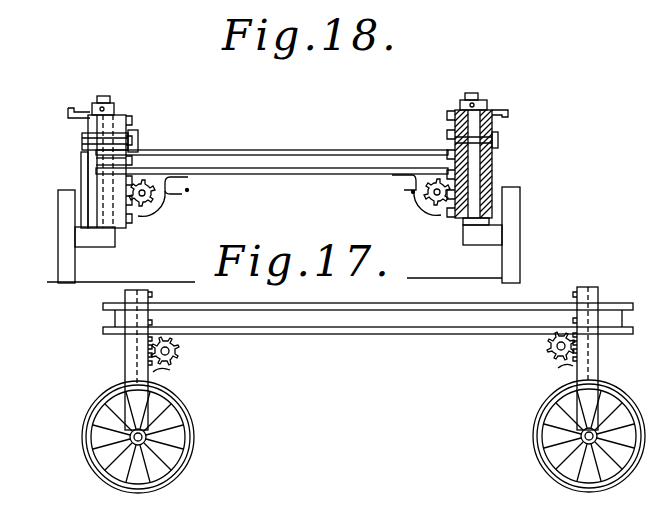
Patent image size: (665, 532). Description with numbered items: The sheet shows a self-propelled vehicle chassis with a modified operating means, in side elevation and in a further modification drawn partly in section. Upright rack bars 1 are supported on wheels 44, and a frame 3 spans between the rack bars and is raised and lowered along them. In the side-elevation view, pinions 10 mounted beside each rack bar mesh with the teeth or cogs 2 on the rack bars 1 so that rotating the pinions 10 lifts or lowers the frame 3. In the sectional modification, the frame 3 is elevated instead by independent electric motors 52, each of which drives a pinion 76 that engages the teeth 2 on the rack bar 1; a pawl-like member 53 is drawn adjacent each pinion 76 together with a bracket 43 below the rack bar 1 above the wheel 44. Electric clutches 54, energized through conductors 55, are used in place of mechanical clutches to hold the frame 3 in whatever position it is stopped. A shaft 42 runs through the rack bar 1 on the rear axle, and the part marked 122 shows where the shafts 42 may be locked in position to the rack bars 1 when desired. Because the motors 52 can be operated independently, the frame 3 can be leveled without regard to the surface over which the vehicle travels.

In FIG. 18, the rack bar 1 is at (118, 118).
In FIG. 17, the rack bar 1 is at (137, 350).
In FIG. 18, the teeth or cogs 2 is at (133, 125).
In FIG. 17, the teeth or cogs 2 is at (155, 377).
In FIG. 17, the frame 3 is at (396, 320).
In FIG. 17, the pinion 10 is at (178, 352).
In FIG. 18, the shaft 42 is at (477, 178).
In FIG. 18, the axle bracket 43 is at (94, 247).
In FIG. 18, the wheel 44 is at (67, 284).
In FIG. 17, the wheel 44 is at (194, 443).
In FIG. 18, the electric motor 52 is at (165, 191).
In FIG. 18, the pawl 53 is at (182, 204).
In FIG. 18, the electric clutch 54 is at (90, 137).
In FIG. 18, the conductor 55 is at (70, 150).
In FIG. 18, the pinion 76 is at (144, 210).
In FIG. 18, the locking means 122 is at (70, 100).